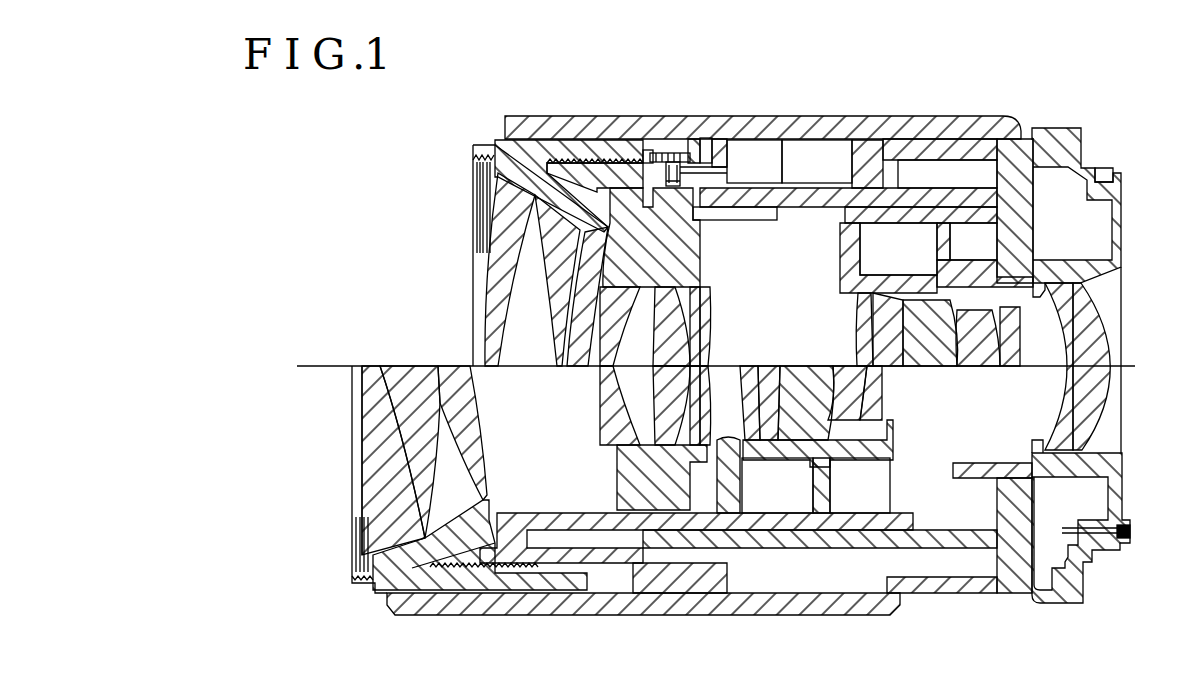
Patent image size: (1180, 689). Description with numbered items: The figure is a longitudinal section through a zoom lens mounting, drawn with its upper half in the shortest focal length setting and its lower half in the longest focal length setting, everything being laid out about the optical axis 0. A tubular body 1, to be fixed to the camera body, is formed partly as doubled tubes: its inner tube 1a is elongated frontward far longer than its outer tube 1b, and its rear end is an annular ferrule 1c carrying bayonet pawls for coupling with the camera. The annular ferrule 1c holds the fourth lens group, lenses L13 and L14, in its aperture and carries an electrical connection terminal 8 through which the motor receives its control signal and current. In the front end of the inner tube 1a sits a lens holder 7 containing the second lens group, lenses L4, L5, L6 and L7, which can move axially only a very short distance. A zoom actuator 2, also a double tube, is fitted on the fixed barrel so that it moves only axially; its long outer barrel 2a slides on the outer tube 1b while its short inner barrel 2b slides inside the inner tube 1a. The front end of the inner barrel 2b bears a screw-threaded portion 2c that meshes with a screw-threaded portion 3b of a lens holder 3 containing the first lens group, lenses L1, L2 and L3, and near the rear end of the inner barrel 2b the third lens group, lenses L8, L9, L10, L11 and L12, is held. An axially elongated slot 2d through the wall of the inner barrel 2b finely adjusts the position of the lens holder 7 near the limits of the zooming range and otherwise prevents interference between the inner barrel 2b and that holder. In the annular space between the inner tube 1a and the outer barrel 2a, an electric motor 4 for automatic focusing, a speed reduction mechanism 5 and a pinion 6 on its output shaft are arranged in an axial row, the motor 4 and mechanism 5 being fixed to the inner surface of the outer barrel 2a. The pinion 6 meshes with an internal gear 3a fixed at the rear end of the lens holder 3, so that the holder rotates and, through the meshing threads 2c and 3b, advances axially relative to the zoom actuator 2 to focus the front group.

The optical axis 0 is at (708, 365).
The tubular body 1 is at (918, 320).
The inner tube 1a is at (870, 197).
The outer tube 1b is at (920, 150).
The annular ferrule 1c is at (1116, 173).
The zoom actuator 2 is at (710, 358).
The outer barrel 2a is at (963, 131).
The inner barrel 2b is at (892, 213).
The screw-threaded portion 2c is at (578, 170).
The axially elongated slot 2d is at (743, 221).
The lens holder 3 is at (521, 330).
The internal gear 3a is at (653, 155).
The screw-threaded portion 3b is at (563, 150).
The electric motor 4 is at (820, 155).
The speed reduction mechanism 5 is at (758, 160).
The pinion 6 is at (672, 162).
The lens holder 7 is at (696, 228).
The electrical connection terminal 8 is at (1130, 531).
The lens L1 is at (377, 394).
The lens L2 is at (407, 428).
The lens L3 is at (450, 470).
The lens L4 is at (608, 384).
The lens L5 is at (652, 425).
The lens L6 is at (686, 436).
The lens L7 is at (702, 452).
The lens L8 is at (862, 322).
The lens L9 is at (875, 345).
The lens L10 is at (930, 350).
The lens L11 is at (972, 345).
The lens L12 is at (1010, 345).
The lens L13 is at (1063, 312).
The lens L14 is at (1090, 347).